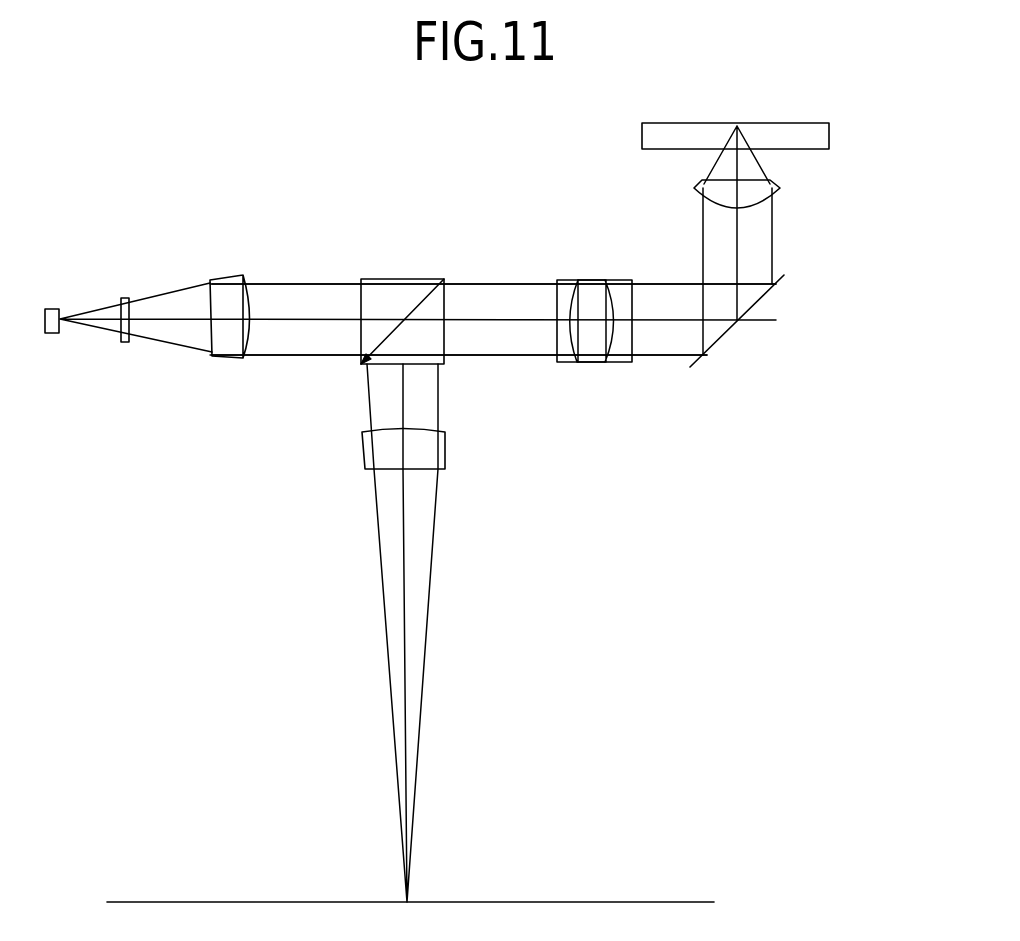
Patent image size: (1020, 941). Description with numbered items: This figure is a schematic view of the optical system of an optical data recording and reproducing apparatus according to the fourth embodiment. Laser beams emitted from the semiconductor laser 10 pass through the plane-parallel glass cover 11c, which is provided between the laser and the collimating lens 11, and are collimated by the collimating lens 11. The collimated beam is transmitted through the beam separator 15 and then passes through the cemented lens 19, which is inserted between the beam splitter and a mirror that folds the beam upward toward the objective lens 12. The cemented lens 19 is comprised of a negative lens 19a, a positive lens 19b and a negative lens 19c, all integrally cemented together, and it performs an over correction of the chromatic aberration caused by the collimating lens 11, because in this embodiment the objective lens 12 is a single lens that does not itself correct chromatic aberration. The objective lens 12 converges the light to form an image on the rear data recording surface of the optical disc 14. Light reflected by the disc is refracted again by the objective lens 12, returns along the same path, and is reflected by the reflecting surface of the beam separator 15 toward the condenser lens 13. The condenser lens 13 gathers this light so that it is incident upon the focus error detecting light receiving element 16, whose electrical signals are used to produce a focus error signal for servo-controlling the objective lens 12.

The semiconductor laser 10 is at (55, 309).
The collimating lens 11 is at (232, 357).
The plane-parallel glass cover 11c is at (126, 342).
The objective lens 12 is at (755, 192).
The condenser lens 13 is at (443, 455).
The optical disc 14 is at (820, 137).
The beam separator 15 is at (413, 279).
The focus error detecting light receiving element 16 is at (570, 902).
The cemented lens 19 is at (608, 370).
The negative lens 19a is at (570, 278).
The positive lens 19b is at (597, 278).
The negative lens 19c is at (620, 278).